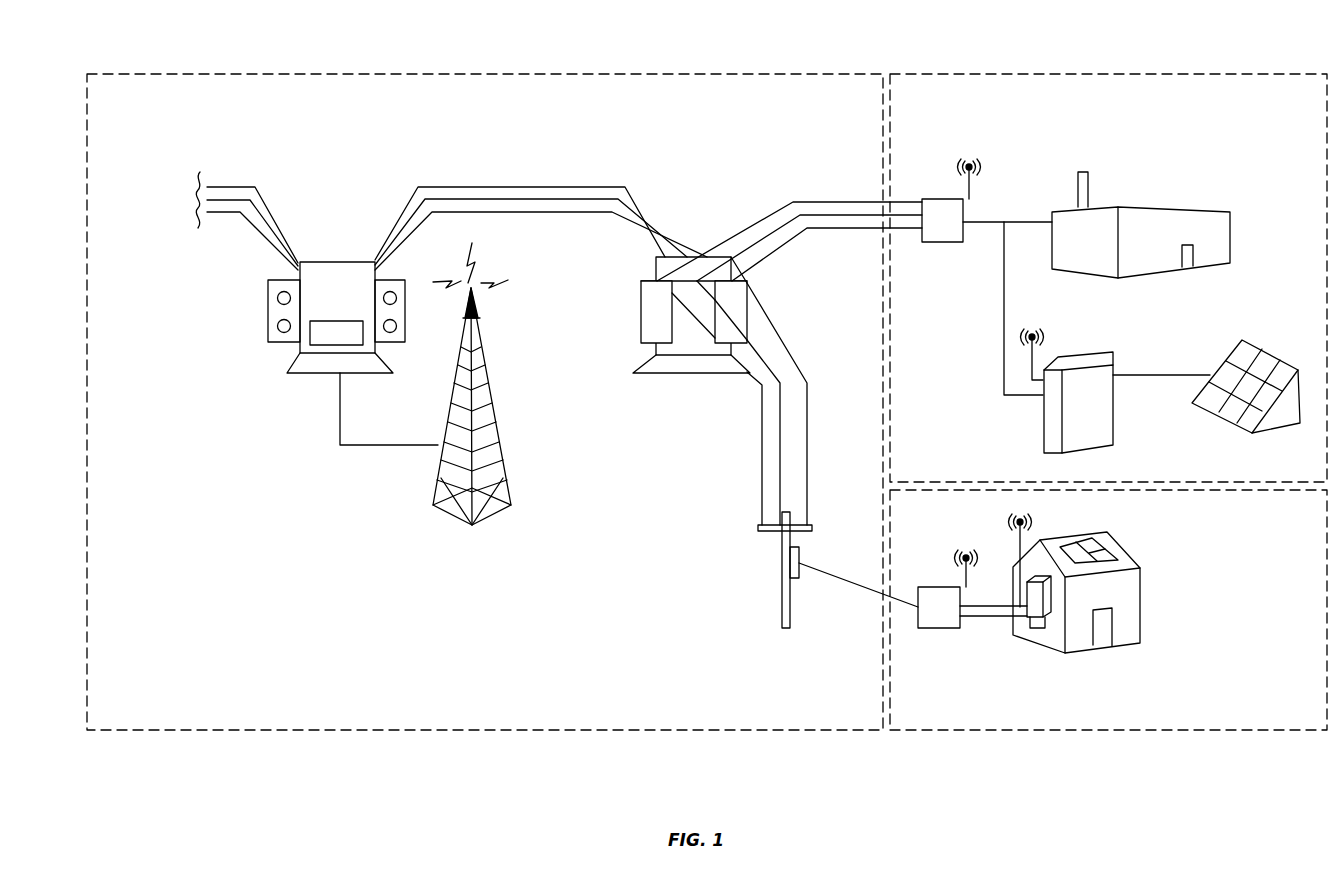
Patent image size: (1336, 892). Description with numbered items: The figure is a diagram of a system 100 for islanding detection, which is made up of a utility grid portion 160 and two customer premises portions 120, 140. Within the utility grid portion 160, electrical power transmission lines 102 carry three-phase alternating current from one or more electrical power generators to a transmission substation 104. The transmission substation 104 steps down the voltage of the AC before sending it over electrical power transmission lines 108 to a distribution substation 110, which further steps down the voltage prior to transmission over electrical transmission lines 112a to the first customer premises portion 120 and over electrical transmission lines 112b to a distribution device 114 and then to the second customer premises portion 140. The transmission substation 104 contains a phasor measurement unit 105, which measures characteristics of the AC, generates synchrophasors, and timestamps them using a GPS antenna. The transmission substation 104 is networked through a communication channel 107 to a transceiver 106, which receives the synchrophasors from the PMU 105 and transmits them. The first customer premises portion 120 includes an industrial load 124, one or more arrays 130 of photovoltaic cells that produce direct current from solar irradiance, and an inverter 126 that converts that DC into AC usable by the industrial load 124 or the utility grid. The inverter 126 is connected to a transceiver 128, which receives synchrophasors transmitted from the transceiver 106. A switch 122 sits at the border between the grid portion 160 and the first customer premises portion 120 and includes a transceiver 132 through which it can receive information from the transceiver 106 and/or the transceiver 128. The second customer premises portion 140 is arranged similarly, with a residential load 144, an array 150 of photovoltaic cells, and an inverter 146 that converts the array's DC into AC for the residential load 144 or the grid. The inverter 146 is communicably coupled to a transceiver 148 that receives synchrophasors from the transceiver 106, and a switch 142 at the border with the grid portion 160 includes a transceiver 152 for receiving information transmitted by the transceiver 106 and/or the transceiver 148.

The system for islanding detection 100 is at (472, 757).
The electrical power transmission lines 102 is at (235, 164).
The transmission substation 104 is at (287, 373).
The phasor measurement unit (PMU) 105 is at (327, 321).
The transceiver 106 is at (433, 505).
The communication channel 107 is at (340, 424).
The electrical power transmission lines 108 is at (550, 173).
The distribution substation 110 is at (633, 373).
The electrical transmission lines 112a is at (842, 192).
The electrical transmission lines 112b is at (762, 468).
The distribution device 114 is at (782, 578).
The first customer premises portion 120 is at (1212, 74).
The switch 122 is at (950, 199).
The industrial load 124 is at (1196, 209).
The inverter 126 is at (1100, 358).
The transceiver 128 is at (1022, 351).
The arrays of photovoltaic cells 130 is at (1252, 340).
The transceiver 132 is at (976, 190).
The second customer premises portion 140 is at (1215, 731).
The switch 142 is at (952, 628).
The residential load 144 is at (1142, 598).
The inverter 146 is at (1040, 630).
The transceiver 148 is at (1013, 533).
The array of photovoltaic cells 150 is at (1112, 548).
The transceiver 152 is at (957, 572).
The utility grid portion 160 is at (792, 731).